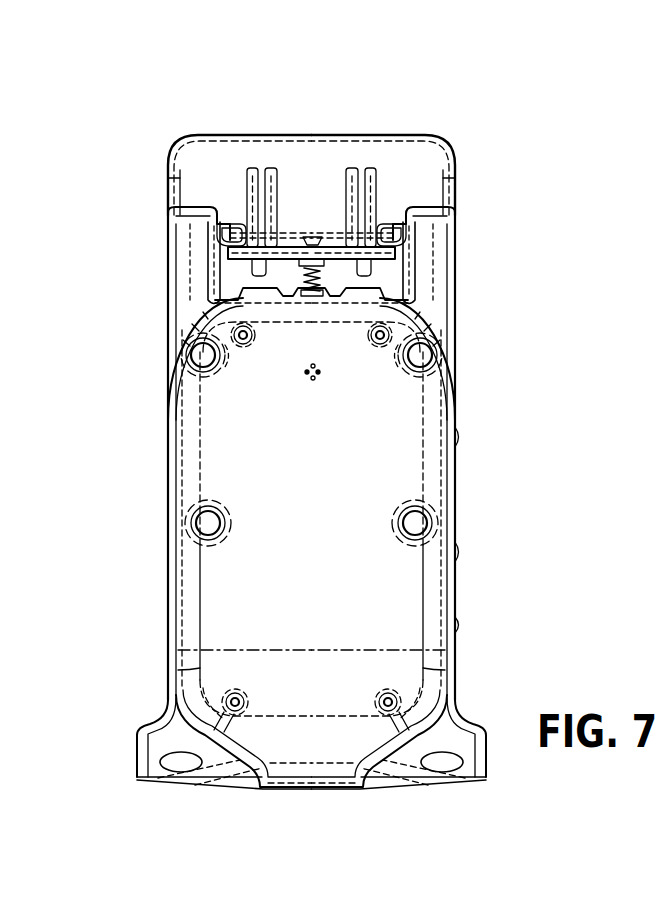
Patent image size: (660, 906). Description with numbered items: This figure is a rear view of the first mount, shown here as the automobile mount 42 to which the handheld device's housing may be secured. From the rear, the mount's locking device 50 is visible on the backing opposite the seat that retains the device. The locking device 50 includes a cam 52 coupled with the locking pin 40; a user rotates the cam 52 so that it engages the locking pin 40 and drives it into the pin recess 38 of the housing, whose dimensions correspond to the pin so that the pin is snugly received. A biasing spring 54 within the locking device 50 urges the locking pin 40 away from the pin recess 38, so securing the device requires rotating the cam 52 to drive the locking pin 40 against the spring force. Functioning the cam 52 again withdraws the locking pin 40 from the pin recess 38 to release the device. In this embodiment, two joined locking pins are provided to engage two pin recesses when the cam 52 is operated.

The locking device 50 is at (186, 93).
The cam 52 is at (446, 152).
The locking pin 40 is at (200, 303).
The pin recess 38 is at (205, 322).
The biasing spring 54 is at (314, 298).
The automobile mount 42 is at (387, 633).